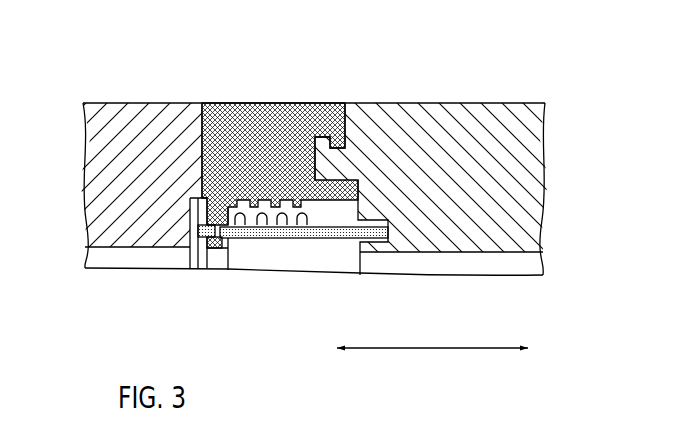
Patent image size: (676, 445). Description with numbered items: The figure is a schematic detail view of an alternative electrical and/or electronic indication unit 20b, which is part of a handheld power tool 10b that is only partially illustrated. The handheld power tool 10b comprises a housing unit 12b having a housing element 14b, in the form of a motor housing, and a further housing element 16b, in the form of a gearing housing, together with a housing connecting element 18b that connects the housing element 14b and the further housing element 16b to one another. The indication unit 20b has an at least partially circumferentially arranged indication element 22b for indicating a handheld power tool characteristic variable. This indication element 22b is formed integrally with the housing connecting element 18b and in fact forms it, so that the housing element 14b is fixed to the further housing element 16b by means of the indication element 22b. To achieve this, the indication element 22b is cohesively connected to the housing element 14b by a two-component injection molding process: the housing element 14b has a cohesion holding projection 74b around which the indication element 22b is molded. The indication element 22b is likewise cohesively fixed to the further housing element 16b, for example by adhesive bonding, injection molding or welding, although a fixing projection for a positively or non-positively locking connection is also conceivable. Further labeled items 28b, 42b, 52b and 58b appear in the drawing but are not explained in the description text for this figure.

The handheld power tool 10b is at (106, 83).
The housing unit 12b is at (567, 101).
The housing element 14b is at (447, 103).
The further housing element 16b is at (137, 102).
The housing connecting element 18b is at (238, 103).
The indication element 22b is at (280, 147).
The electrical and/or electronic indication unit 20b is at (182, 282).
The outer surface 28b is at (508, 98).
The width 42b is at (435, 347).
The carrier 52b is at (238, 240).
The circuit board 58b is at (278, 240).
The cohesion holding projection 74b is at (320, 136).